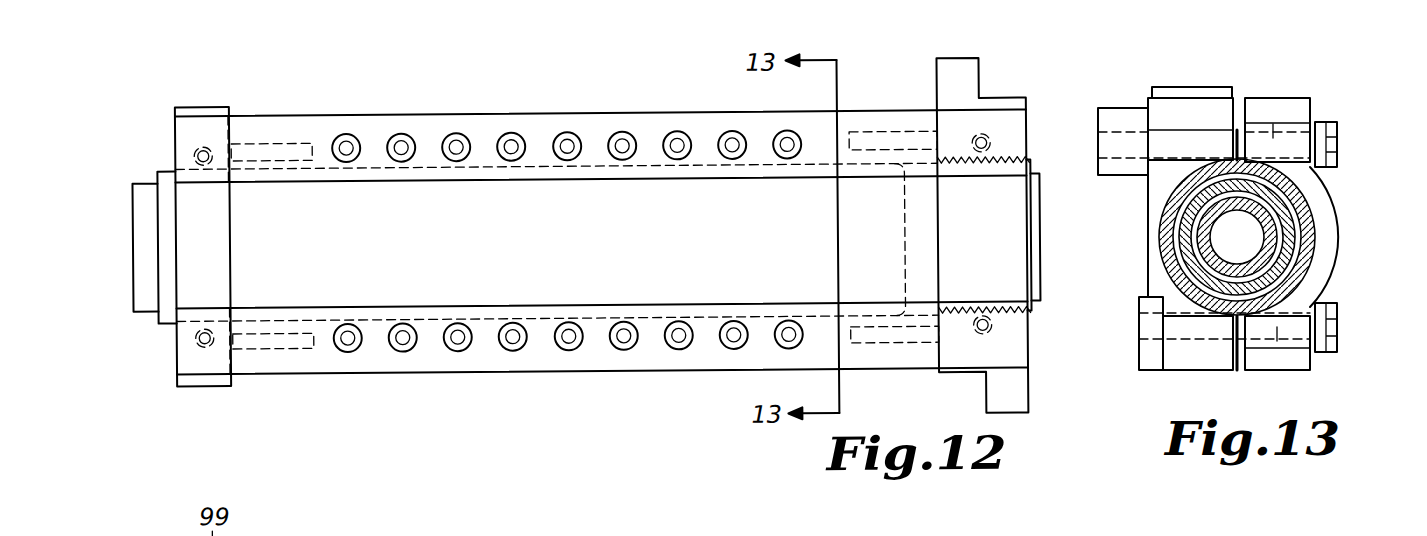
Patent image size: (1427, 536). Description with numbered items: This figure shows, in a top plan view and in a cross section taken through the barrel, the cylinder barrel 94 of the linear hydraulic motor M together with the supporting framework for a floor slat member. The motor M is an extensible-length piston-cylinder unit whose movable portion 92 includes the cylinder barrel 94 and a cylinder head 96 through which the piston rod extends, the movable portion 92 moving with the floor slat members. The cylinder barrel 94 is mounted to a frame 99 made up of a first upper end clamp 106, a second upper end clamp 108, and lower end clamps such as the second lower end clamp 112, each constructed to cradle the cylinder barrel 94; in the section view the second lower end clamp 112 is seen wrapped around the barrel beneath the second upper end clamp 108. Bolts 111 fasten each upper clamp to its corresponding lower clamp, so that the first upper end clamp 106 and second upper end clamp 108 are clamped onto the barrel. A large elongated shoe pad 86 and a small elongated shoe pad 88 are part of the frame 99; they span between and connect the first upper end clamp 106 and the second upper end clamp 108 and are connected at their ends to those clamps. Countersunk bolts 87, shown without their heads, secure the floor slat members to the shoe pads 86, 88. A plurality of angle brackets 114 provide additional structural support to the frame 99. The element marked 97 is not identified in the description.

In FIG. 12, the large elongated shoe pad 86 is at (608, 118).
In FIG. 13, the large elongated shoe pad 86 is at (1122, 104).
In FIG. 12, the countersunk bolts 87 is at (513, 133).
In FIG. 12, the small elongated shoe pad 88 is at (652, 360).
In FIG. 13, the small elongated shoe pad 88 is at (1133, 365).
In FIG. 12, the movable portion 92 is at (437, 330).
In FIG. 12, the cylinder barrel 94 is at (555, 288).
In FIG. 13, the cylinder barrel 94 is at (1303, 234).
In FIG. 12, the cylinder head 96 is at (148, 303).
In FIG. 12, the right end cap 97 is at (993, 276).
In FIG. 12, the frame 99 is at (1052, 122).
In FIG. 12, the first upper end clamp 106 is at (1012, 367).
In FIG. 12, the second upper end clamp 108 is at (213, 376).
In FIG. 13, the second upper end clamp 108 is at (1152, 223).
In FIG. 12, the bolts 111 is at (204, 147).
In FIG. 13, the bolts 111 is at (1277, 128).
In FIG. 13, the second lower end clamp 112 is at (1317, 188).
In FIG. 12, the angle brackets 114 is at (275, 147).
In FIG. 13, the angle brackets 114 is at (1205, 335).
In FIG. 13, the linear hydraulic motor M is at (1275, 260).